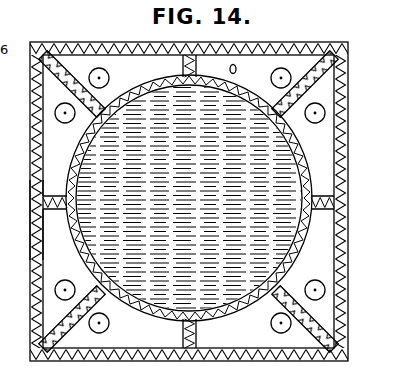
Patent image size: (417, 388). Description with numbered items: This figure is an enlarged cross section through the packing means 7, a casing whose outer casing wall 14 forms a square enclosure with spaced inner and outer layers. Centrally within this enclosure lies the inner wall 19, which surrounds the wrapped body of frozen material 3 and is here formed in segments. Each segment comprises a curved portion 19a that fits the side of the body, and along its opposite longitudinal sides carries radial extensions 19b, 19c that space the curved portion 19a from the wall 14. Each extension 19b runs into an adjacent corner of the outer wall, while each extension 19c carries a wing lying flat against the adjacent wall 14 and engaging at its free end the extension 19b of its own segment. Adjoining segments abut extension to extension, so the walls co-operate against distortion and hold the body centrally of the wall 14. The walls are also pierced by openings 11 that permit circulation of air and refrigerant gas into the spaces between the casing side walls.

The tank or drum 3 is at (82, 247).
The packing means 7 is at (25, 220).
The openings 11 is at (326, 116).
The casing wall 14 is at (348, 265).
The inner wall 19 is at (92, 201).
The curved portion 19a is at (232, 314).
The radial extension 19b is at (349, 54).
The radial extension 19c is at (332, 192).